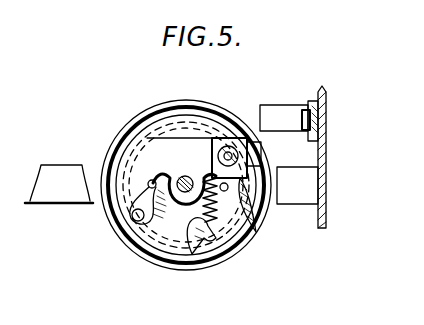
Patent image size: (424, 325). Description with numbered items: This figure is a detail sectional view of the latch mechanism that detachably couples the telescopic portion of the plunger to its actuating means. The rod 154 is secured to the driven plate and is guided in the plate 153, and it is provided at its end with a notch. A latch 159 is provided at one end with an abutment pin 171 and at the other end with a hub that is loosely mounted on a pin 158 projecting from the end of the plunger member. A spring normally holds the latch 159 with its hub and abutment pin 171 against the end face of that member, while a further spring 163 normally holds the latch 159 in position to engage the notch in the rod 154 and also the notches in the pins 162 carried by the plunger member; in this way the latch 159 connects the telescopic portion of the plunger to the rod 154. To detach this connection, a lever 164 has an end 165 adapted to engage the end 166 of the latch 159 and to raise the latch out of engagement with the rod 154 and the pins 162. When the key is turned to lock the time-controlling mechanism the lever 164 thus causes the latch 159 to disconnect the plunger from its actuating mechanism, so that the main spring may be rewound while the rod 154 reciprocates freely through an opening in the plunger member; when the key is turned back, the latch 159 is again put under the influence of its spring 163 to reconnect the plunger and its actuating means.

The plate 153 is at (307, 204).
The rod 154 is at (184, 177).
The pin 158 is at (237, 136).
The latch 159 is at (198, 140).
The pins 162 is at (148, 188).
The spring 163 is at (191, 254).
The lever 164 is at (325, 110).
The end 165 is at (294, 113).
The end 166 is at (311, 124).
The abutment pin 171 is at (127, 242).